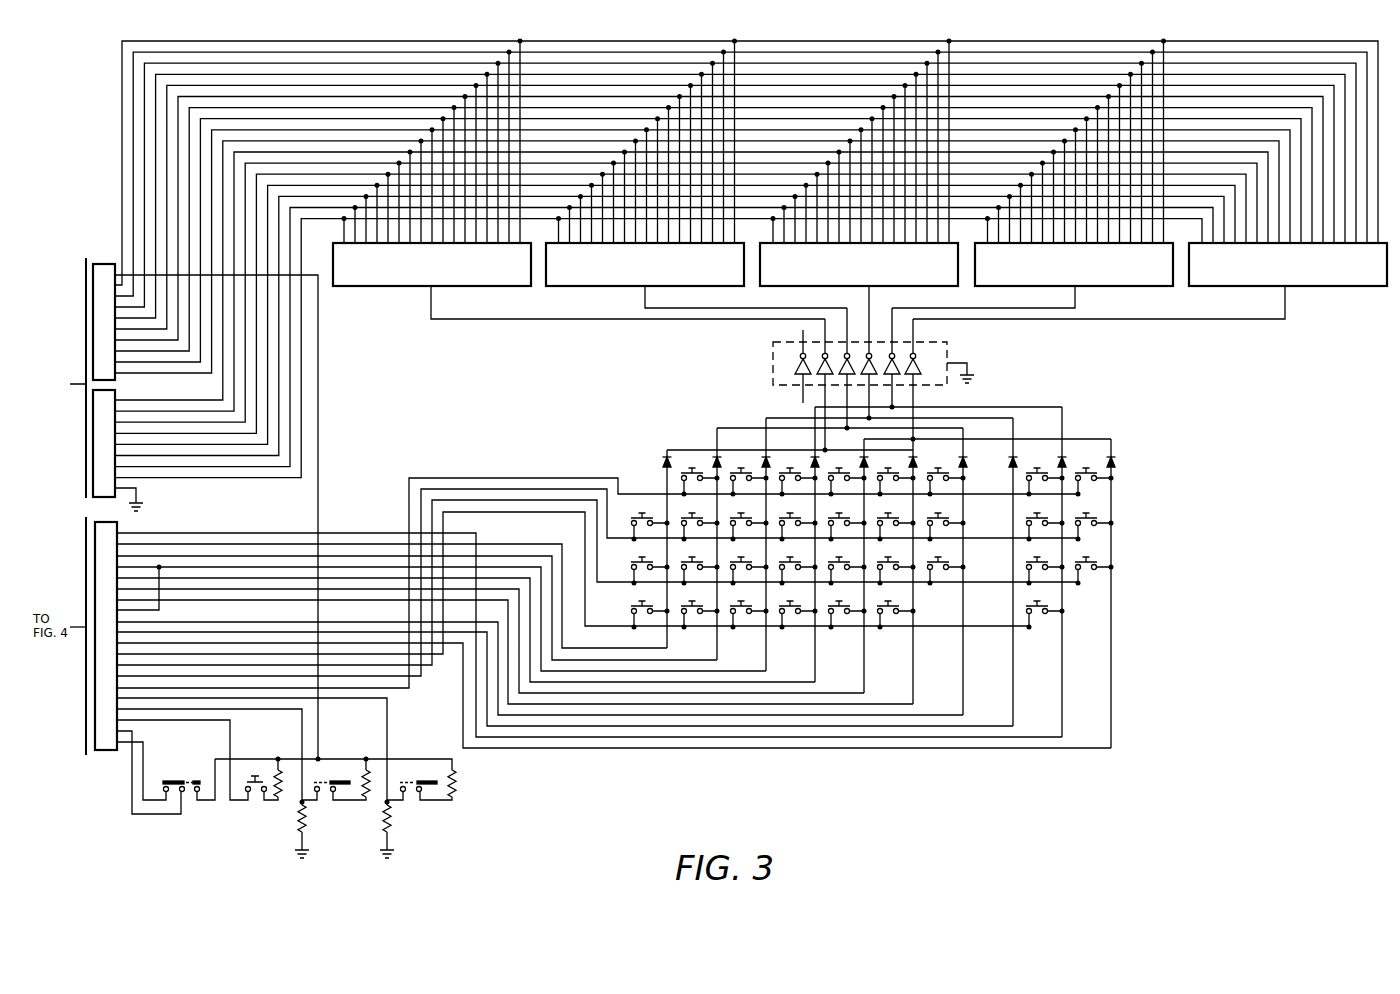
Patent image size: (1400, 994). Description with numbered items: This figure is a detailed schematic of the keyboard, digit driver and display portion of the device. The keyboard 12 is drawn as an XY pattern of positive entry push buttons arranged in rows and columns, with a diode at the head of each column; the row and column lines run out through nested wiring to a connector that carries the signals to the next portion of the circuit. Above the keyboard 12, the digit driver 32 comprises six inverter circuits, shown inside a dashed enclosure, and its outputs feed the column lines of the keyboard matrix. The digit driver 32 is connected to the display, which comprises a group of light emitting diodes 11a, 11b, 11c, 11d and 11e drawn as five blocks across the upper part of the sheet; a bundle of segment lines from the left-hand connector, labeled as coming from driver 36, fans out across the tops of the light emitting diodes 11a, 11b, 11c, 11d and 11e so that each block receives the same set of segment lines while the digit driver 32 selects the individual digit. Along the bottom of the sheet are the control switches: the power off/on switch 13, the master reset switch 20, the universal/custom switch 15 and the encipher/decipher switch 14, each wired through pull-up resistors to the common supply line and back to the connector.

The light emitting diode 11a is at (452, 273).
The light emitting diode 11b is at (665, 273).
The light emitting diode 11c is at (879, 273).
The light emitting diode 11d is at (1093, 273).
The light emitting diode 11e is at (1308, 273).
The keyboard 12 is at (1152, 582).
The power off/on switch 13 is at (186, 794).
The encipher/decipher switch 14 is at (413, 796).
The universal/custom switch 15 is at (326, 796).
The master reset switch 20 is at (255, 800).
The digit driver 32 is at (948, 350).
The driver connector 36 is at (83, 384).